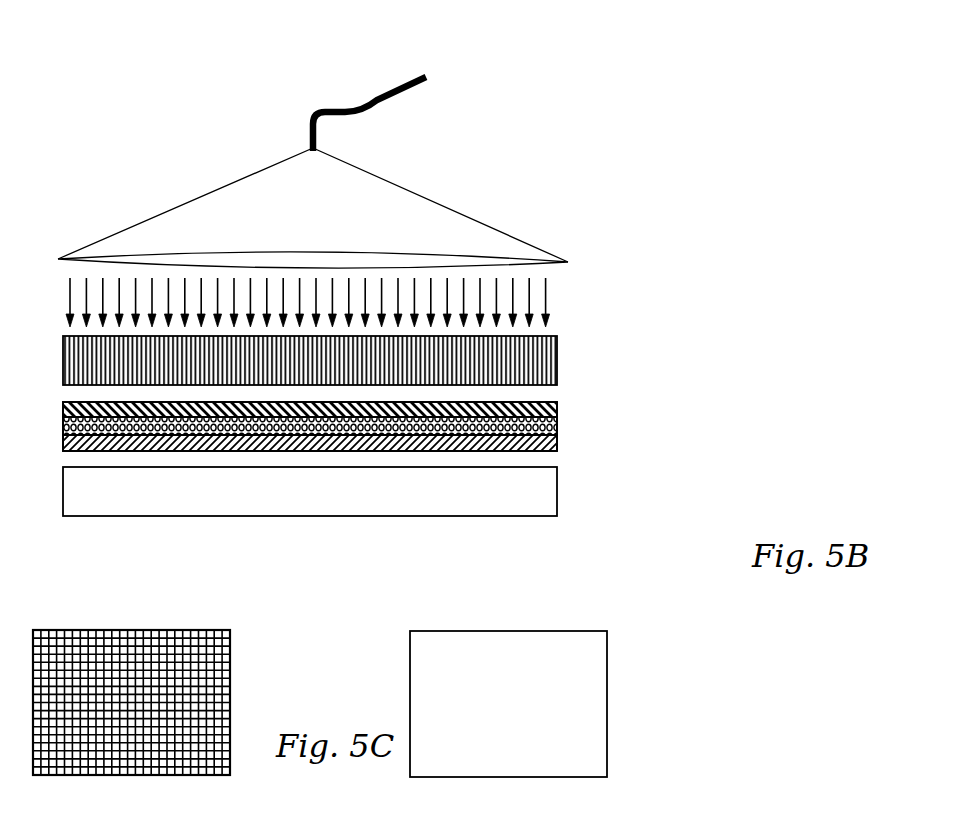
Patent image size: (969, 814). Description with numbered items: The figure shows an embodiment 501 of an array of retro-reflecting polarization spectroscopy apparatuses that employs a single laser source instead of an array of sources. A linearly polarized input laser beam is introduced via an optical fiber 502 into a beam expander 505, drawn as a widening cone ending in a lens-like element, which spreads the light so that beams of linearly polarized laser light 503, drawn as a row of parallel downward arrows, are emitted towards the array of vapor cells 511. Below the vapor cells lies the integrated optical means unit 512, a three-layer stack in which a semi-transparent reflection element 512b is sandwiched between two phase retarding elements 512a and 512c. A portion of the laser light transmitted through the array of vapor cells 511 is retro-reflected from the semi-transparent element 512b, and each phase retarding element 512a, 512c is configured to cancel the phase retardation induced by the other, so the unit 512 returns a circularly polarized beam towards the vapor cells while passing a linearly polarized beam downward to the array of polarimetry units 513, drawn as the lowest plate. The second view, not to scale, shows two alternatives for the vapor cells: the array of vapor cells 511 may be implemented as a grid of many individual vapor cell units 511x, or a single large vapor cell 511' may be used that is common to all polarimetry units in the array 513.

In FIG. 5B, the embodiment of the array of retro-reflecting polarization spectroscopy apparatuse 501 is at (134, 153).
In FIG. 5B, the optical fiber 502 is at (346, 108).
In FIG. 5B, the beam expander 505 is at (435, 200).
In FIG. 5B, the beams of linearly polarized laser light 503 is at (551, 296).
In FIG. 5B, the array of vapor cells 511 is at (357, 349).
In FIG. 5C, the array of vapor cells 511 is at (163, 673).
In FIG. 5B, the integrated optical means unit 512 is at (436, 422).
In FIG. 5B, the phase retarding element 512a is at (558, 405).
In FIG. 5B, the semi-transparent reflection element 512b is at (558, 420).
In FIG. 5B, the phase retarding element 512c is at (558, 442).
In FIG. 5B, the array of polarimetry units 513 is at (557, 495).
In FIG. 5C, the vapor cell units 511x is at (131, 640).
In FIG. 5C, the large single vapor cell 511' is at (582, 704).